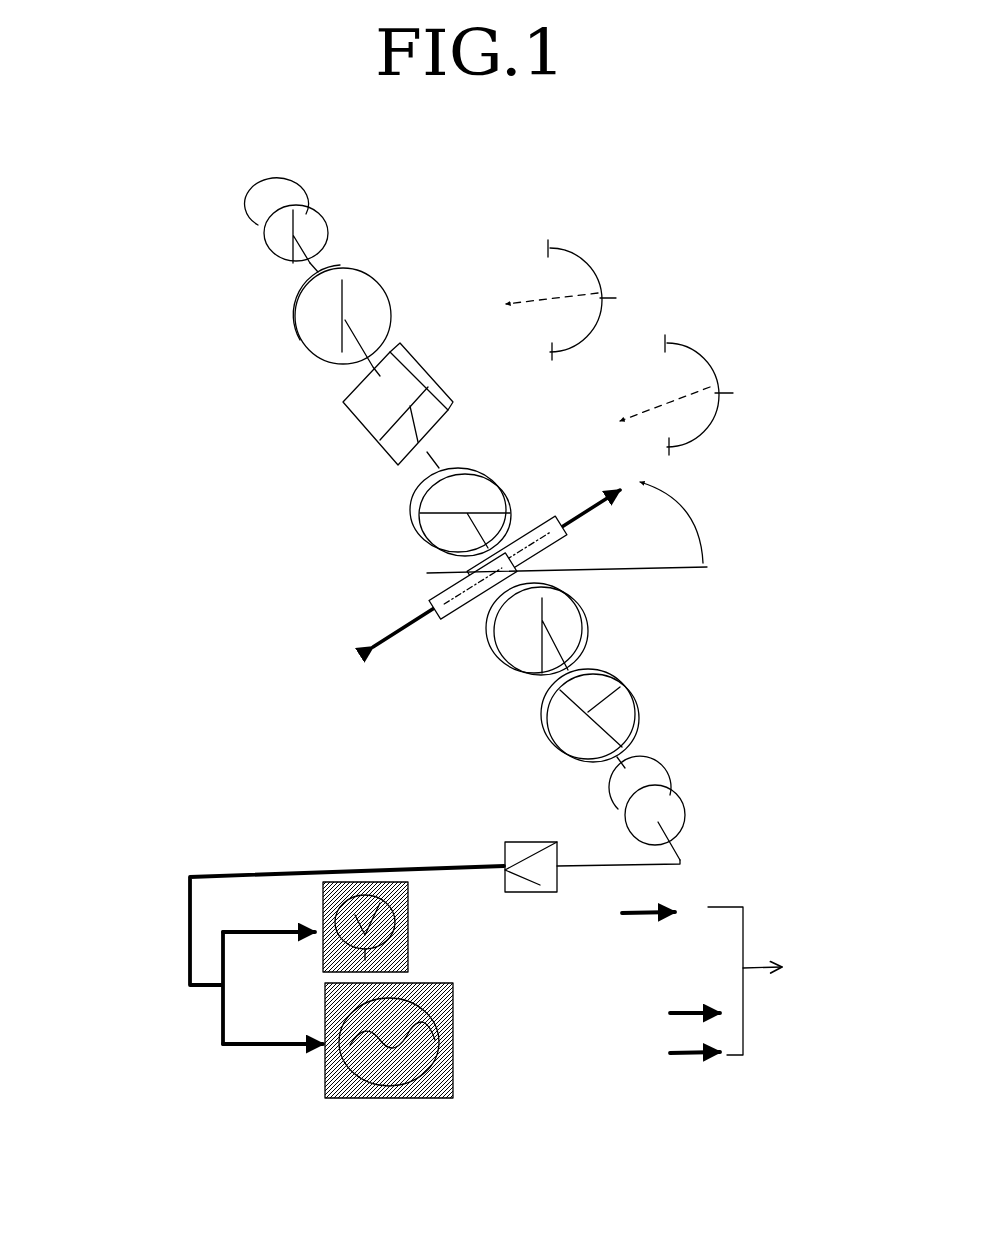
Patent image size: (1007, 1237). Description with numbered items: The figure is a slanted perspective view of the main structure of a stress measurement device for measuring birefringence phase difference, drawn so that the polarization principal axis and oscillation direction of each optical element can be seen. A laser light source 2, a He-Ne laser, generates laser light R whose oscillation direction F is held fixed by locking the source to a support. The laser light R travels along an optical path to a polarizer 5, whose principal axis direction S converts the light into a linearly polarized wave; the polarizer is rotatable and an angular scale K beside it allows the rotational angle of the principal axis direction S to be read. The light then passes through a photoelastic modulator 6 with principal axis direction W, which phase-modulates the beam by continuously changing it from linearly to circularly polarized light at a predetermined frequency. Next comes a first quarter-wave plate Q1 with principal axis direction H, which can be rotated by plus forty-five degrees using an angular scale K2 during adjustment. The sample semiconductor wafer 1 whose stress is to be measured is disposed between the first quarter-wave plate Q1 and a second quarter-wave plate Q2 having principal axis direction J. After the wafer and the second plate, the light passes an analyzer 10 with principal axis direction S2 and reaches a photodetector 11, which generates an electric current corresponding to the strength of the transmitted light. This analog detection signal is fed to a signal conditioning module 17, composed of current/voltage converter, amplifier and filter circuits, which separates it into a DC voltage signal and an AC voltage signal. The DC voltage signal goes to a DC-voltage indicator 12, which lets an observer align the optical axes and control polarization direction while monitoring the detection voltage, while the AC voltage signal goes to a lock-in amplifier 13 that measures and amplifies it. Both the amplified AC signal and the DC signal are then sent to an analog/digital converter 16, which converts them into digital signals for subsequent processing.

The sample semiconductor wafer 1 is at (417, 597).
The laser light source 2 is at (238, 217).
The polarizer 5 is at (290, 338).
The photoelastic modulator (PEM) 6 is at (343, 430).
The analyzer 10 is at (550, 740).
The photodetector 11 is at (677, 777).
The DC-voltage indicator 12 is at (317, 912).
The lock-in amplifier 13 is at (322, 1070).
The analog/digital converter 16 is at (737, 981).
The signal conditioning module 17 is at (505, 842).
The oscillation direction F is at (293, 220).
The laser light R is at (312, 266).
The principal axis direction of polarizer S is at (343, 303).
The principal axis direction of PEM W is at (423, 413).
The angular scale K is at (607, 270).
The angular scale K2 is at (717, 363).
The first quarter-wave plate Q1 is at (413, 537).
The principal axis direction of first quarter-wave plate H is at (485, 512).
The second quarter-wave plate Q2 is at (494, 657).
The principal axis direction of second quarter-wave plate J is at (542, 617).
The principal axis direction of analyzer S2 is at (620, 687).